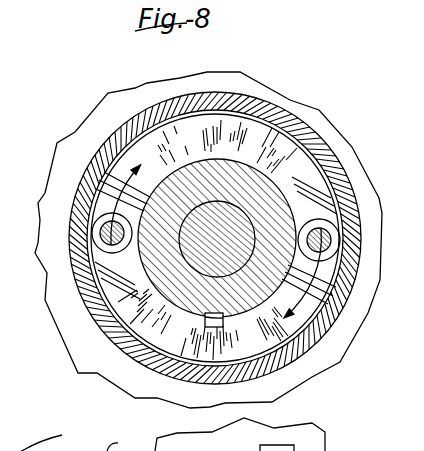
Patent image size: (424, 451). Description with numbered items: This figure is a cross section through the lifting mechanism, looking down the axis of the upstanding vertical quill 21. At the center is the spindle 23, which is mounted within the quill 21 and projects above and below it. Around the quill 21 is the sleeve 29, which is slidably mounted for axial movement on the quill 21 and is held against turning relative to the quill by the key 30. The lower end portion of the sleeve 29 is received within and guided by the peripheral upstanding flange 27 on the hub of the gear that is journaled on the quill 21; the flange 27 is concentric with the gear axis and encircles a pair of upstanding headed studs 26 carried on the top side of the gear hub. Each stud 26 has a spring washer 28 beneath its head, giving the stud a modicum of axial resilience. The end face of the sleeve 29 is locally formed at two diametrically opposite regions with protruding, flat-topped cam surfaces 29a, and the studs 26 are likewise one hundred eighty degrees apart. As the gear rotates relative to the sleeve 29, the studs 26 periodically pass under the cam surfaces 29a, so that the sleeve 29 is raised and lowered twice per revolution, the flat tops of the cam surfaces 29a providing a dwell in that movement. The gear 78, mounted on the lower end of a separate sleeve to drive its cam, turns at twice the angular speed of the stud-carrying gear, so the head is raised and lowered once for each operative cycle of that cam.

The quill 21 is at (181, 180).
The spindle 23 is at (231, 212).
The headed studs 26 is at (362, 235).
The peripheral upstanding flange 27 is at (310, 352).
The spring washer 28 is at (95, 241).
The sleeve 29 is at (242, 118).
The cam surfaces 29a is at (97, 217).
The key 30 is at (203, 323).
The gear 78 is at (349, 162).